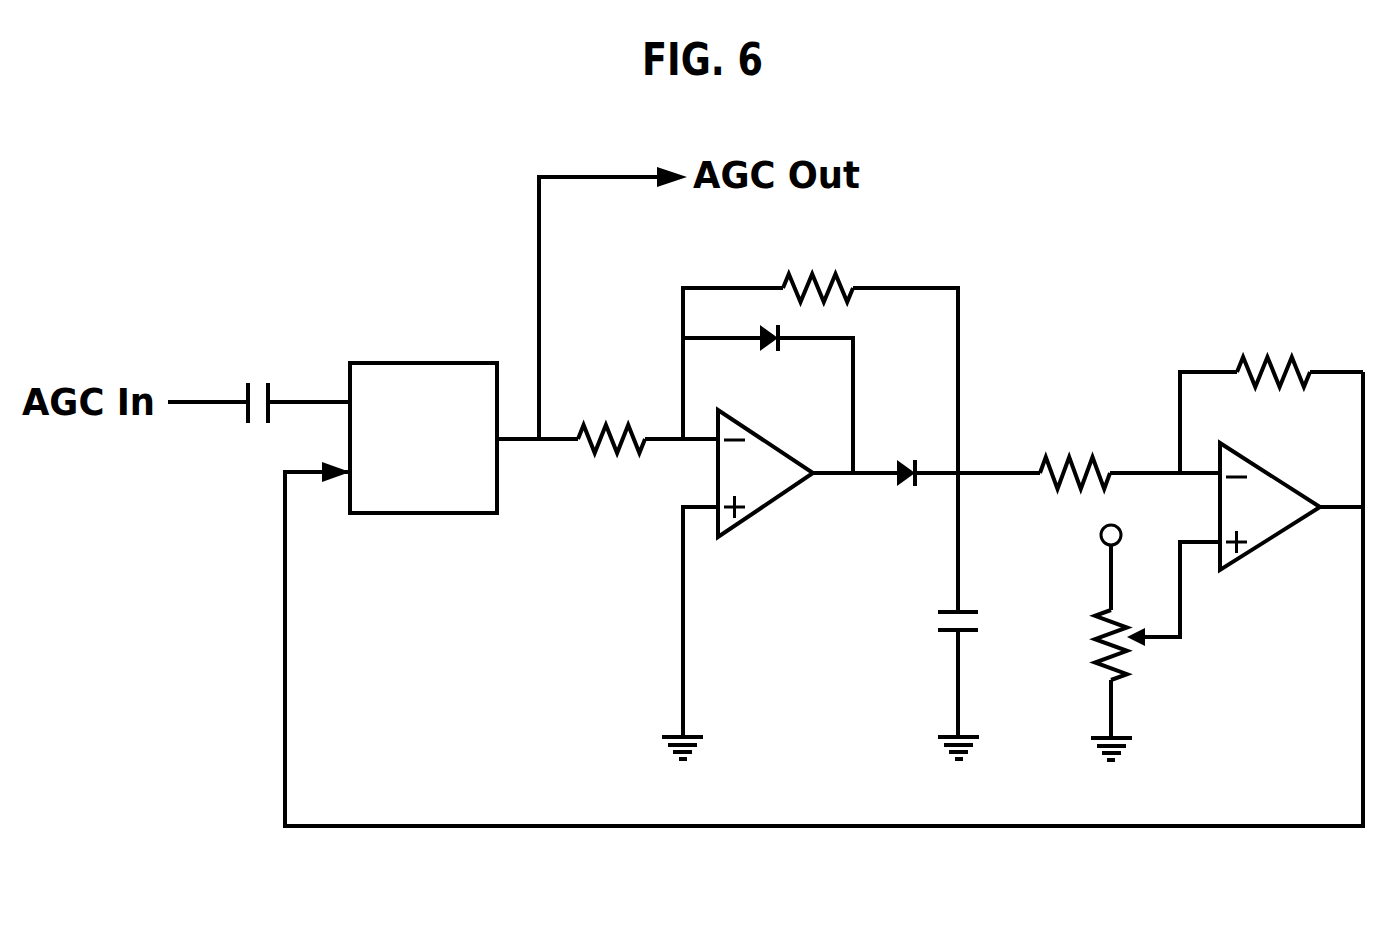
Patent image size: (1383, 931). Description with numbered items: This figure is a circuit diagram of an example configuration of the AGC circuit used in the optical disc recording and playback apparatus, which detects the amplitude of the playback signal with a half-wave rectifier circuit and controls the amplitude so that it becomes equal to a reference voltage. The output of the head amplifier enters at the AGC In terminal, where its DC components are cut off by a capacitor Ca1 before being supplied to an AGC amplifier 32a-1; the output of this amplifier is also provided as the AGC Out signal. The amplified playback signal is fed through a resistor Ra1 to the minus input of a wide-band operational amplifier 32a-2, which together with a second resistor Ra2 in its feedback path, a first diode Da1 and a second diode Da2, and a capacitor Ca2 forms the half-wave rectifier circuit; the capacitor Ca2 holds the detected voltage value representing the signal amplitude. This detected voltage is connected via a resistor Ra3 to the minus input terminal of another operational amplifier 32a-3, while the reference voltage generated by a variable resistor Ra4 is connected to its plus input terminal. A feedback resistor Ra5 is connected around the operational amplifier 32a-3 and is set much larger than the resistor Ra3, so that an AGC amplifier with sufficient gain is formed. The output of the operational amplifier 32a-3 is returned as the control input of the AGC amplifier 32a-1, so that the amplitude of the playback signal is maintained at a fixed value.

The capacitor Ca1 is at (288, 378).
The AGC amplifier 32a-1 is at (423, 461).
The resistor Ra1 is at (607, 415).
The resistor Ra2 is at (820, 417).
The diode Da1 is at (768, 399).
The wide-band operational amplifier 32a-2 is at (779, 584).
The diode Da2 is at (950, 496).
The capacitor Ca2 is at (918, 685).
The resistor Ra3 is at (1128, 430).
The feedback resistor Ra5 is at (1265, 390).
The operational amplifier 32a-3 is at (1245, 557).
The variable resistor Ra4 is at (1067, 642).